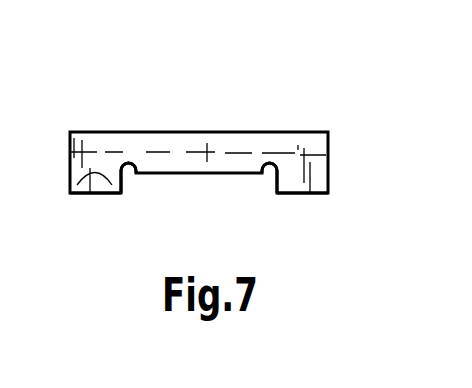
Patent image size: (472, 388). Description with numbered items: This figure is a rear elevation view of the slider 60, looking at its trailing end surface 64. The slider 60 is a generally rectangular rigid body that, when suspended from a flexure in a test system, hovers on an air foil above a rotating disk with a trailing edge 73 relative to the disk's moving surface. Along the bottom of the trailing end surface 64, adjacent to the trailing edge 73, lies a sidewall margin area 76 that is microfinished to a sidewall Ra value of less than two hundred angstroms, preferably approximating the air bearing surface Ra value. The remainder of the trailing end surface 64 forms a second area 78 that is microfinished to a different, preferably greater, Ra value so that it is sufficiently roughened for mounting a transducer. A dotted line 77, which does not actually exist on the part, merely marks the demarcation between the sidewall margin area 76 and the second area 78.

The slider 60 is at (138, 251).
The trailing end surface 64 is at (123, 148).
The trailing edge 73 is at (111, 194).
The sidewall margin area 76 is at (306, 180).
The dotted line 77 is at (161, 140).
The second area 78 is at (222, 140).